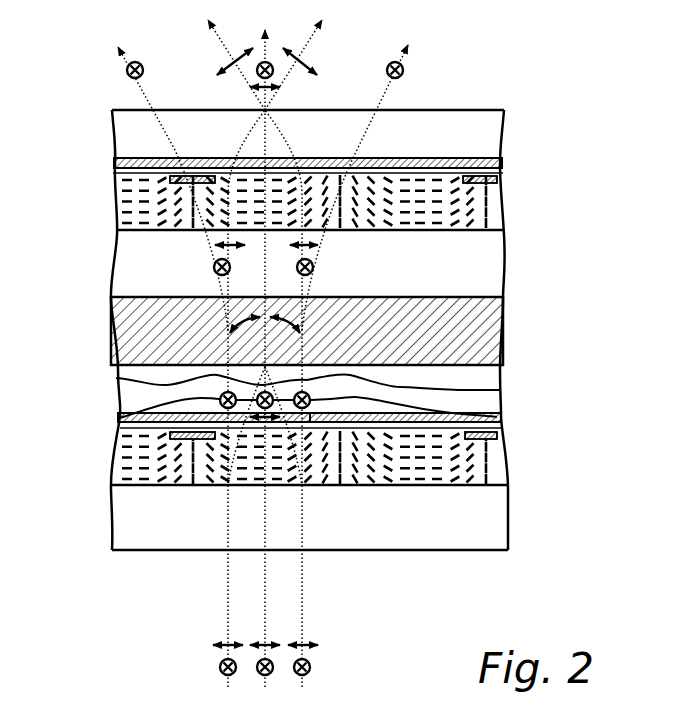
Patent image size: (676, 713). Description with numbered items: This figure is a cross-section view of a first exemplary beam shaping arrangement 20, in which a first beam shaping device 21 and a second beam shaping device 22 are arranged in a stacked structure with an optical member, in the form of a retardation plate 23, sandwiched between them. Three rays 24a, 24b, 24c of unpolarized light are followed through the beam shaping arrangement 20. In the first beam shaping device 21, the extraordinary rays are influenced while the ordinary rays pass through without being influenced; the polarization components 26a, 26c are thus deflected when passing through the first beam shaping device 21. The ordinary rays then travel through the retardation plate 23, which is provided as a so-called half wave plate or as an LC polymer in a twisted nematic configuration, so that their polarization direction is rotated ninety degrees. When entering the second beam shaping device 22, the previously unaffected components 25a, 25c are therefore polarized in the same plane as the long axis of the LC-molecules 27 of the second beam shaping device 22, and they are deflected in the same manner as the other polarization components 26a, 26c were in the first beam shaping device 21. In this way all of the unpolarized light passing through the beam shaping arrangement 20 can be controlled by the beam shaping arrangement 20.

The beam shaping arrangement 20 is at (563, 92).
The first beam shaping device 21 is at (384, 185).
The second beam shaping device 22 is at (558, 463).
The retardation plate 23 is at (497, 322).
The ray of unpolarized light 24a is at (228, 597).
The ray of unpolarized light 24b is at (267, 612).
The ray of unpolarized light 24c is at (305, 571).
The previously unaffected polarization component 25a is at (120, 418).
The previously unaffected polarization component 25c is at (497, 417).
The polarization component 26a is at (133, 382).
The polarization component 26c is at (500, 390).
The LC-molecules 27 is at (483, 230).